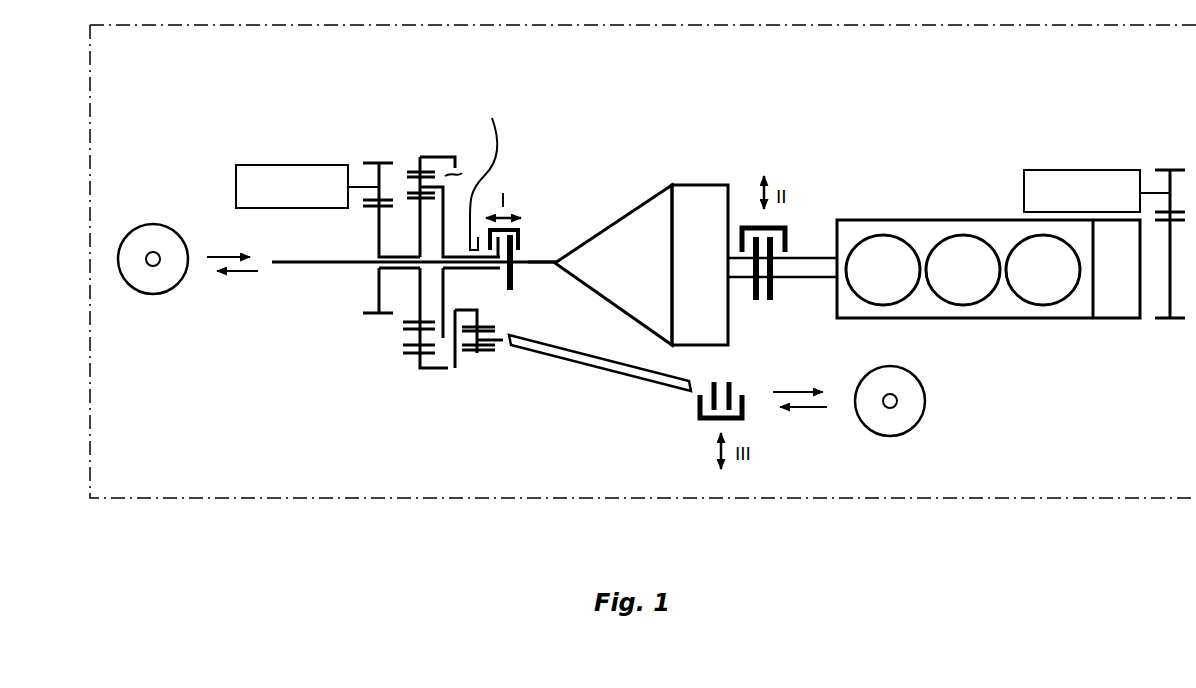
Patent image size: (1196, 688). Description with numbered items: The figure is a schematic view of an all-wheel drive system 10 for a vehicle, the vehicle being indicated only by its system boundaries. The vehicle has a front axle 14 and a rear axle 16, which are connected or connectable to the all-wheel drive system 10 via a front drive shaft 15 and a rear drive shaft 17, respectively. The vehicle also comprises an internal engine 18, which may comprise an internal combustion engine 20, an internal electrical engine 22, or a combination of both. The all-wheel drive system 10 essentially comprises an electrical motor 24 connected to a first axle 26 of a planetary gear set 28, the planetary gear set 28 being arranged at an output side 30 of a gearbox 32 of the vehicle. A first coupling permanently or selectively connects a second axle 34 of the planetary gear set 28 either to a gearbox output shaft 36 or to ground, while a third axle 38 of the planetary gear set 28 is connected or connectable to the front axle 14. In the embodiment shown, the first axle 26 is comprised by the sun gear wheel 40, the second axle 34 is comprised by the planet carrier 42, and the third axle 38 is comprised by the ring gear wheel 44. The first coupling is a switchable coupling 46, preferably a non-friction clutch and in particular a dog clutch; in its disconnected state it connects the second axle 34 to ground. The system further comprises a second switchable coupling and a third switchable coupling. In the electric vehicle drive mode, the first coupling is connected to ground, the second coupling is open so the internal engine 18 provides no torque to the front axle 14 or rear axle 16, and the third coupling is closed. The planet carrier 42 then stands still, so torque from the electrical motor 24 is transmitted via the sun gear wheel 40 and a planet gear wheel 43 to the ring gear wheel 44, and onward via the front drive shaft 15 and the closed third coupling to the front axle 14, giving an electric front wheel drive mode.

The all-wheel drive system 10 is at (866, 119).
The front axle 14 is at (797, 385).
The front drive shaft 15 is at (632, 378).
The rear axle 16 is at (203, 259).
The rear drive shaft 17 is at (297, 262).
The internal engine 18 is at (1105, 350).
The internal combustion engine 20 is at (988, 269).
The internal electrical engine 22 is at (1104, 244).
The electrical motor 24 is at (307, 186).
The first axle 26 is at (365, 293).
The planetary gear set 28 is at (411, 244).
The output side 30 is at (536, 214).
The gearbox 32 is at (641, 265).
The second axle 34 is at (461, 284).
The gearbox output shaft 36 is at (528, 264).
The third axle 38 is at (445, 379).
The sun gear wheel 40 is at (413, 205).
The planet carrier 42 is at (438, 348).
The planet gear wheel 43 is at (403, 327).
The ring gear wheel 44 is at (437, 370).
The switchable coupling 46 is at (516, 190).